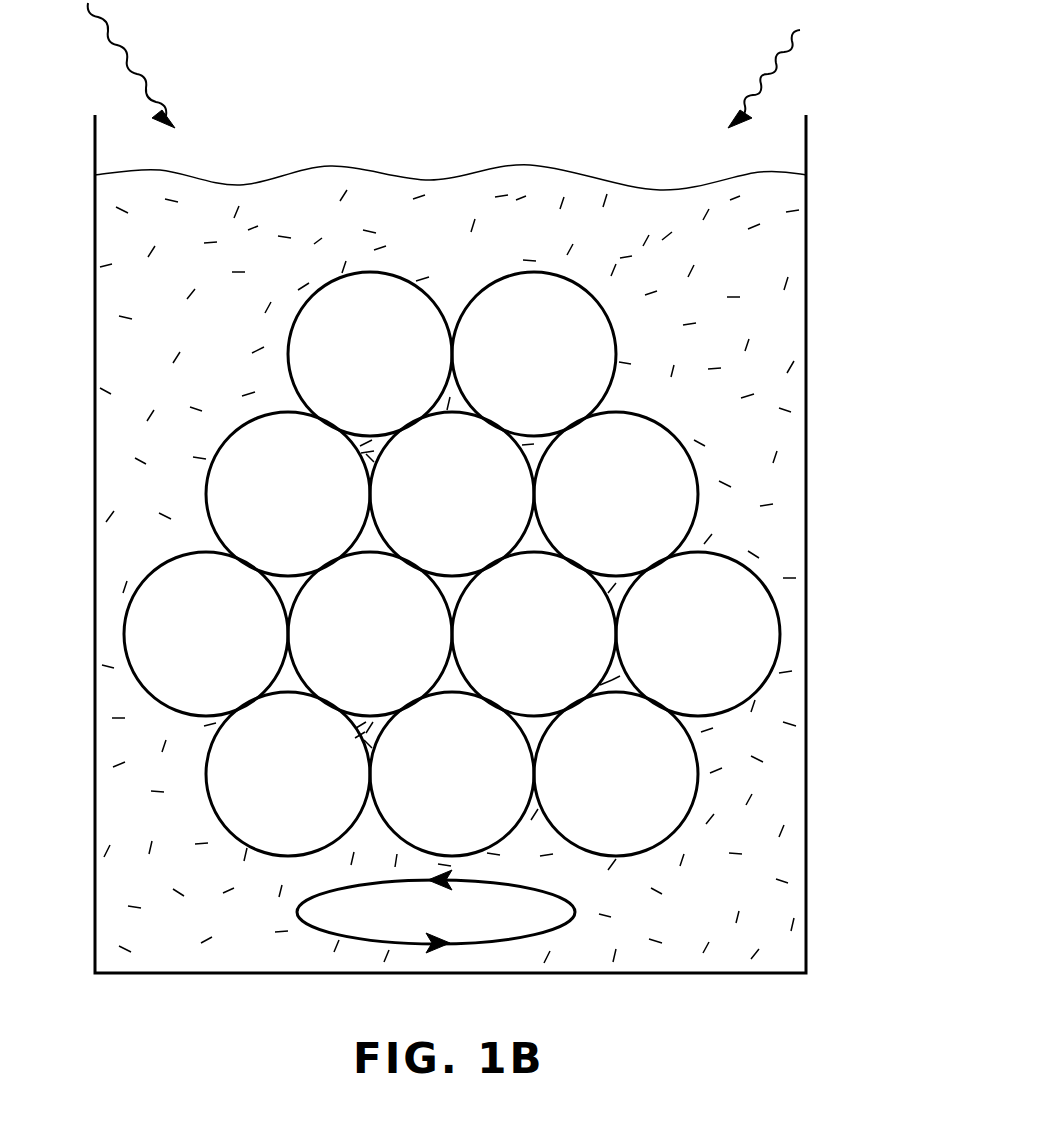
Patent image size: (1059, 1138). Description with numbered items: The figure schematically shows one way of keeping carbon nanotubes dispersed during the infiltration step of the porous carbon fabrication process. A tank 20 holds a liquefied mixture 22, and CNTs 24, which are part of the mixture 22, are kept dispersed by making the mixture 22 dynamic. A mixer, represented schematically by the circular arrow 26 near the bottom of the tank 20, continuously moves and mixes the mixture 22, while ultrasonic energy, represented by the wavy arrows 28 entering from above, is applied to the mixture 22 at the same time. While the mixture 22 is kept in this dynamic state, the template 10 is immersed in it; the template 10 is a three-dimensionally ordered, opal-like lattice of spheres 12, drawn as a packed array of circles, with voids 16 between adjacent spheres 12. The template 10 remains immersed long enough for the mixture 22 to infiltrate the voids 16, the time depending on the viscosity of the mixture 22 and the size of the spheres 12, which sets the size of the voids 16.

The template 10 is at (456, 535).
The spheres 12 is at (155, 572).
The voids 16 is at (607, 678).
The tank 20 is at (95, 258).
The mixture 22 is at (428, 180).
The CNTs 24 is at (380, 248).
The circular arrow 26 is at (493, 943).
The wavy arrows 28 is at (138, 63).